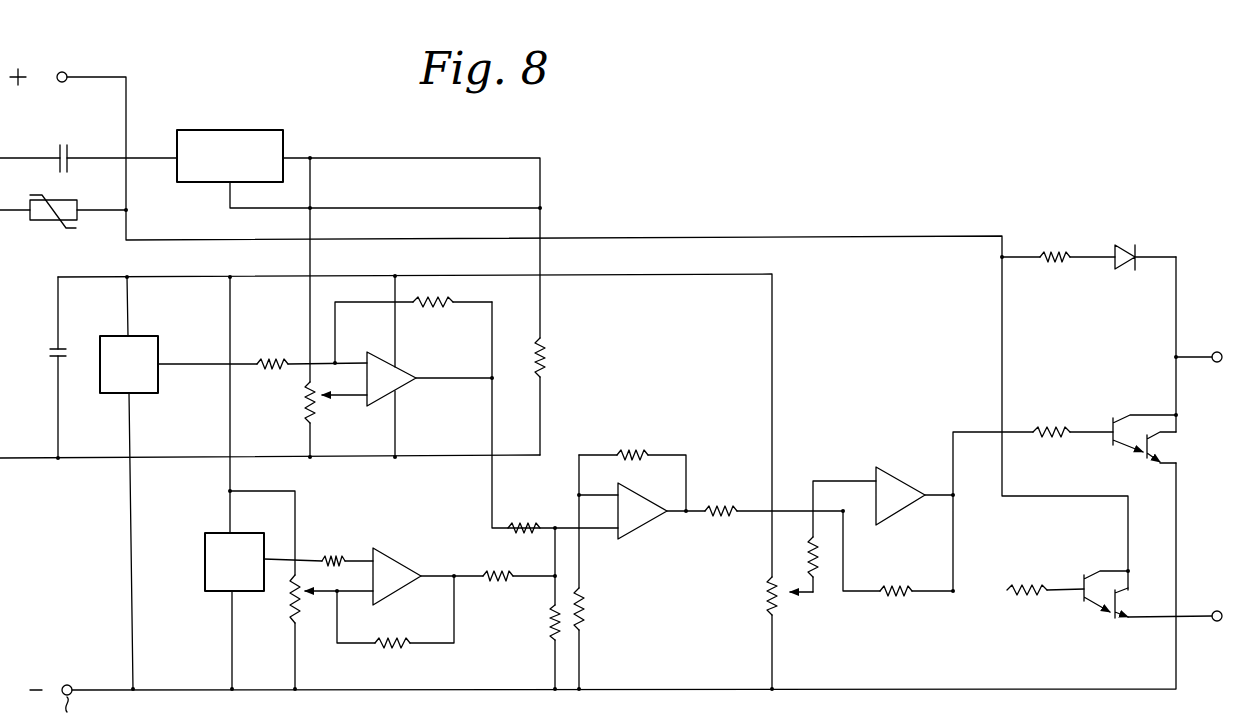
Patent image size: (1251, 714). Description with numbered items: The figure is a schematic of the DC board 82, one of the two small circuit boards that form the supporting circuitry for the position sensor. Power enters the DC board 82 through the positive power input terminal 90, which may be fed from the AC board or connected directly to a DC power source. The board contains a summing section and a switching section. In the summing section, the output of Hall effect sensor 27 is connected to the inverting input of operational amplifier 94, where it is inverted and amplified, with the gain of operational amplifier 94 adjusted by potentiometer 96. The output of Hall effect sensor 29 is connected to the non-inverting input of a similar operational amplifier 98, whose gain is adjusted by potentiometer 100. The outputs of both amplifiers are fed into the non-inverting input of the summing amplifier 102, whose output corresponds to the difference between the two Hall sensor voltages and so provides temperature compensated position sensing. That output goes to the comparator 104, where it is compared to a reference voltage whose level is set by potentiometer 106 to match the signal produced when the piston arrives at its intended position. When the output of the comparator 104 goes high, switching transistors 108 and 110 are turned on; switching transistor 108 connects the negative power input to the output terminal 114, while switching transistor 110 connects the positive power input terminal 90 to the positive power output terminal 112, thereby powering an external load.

The DC board 82 is at (862, 163).
The positive power input terminal 90 is at (63, 71).
The Hall effect sensor 27 is at (233, 346).
The Hall effect sensor 29 is at (254, 563).
The operational amplifier 94 is at (405, 366).
The potentiometer 96 is at (298, 407).
The operational amplifier 98 is at (400, 562).
The potentiometer 100 is at (284, 612).
The summing amplifier 102 is at (632, 537).
The comparator 104 is at (893, 468).
The potentiometer 106 is at (783, 606).
The switching transistor 108 is at (1147, 413).
The switching transistor 110 is at (1103, 615).
The positive power output terminal 112 is at (1213, 625).
The output terminal 114 is at (1217, 364).